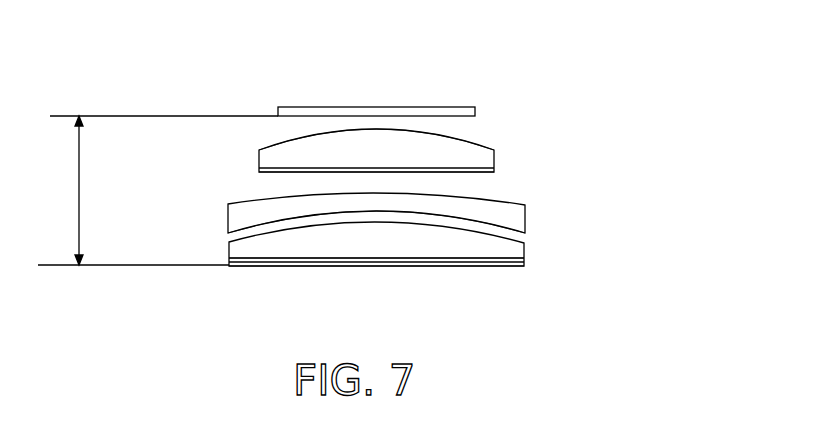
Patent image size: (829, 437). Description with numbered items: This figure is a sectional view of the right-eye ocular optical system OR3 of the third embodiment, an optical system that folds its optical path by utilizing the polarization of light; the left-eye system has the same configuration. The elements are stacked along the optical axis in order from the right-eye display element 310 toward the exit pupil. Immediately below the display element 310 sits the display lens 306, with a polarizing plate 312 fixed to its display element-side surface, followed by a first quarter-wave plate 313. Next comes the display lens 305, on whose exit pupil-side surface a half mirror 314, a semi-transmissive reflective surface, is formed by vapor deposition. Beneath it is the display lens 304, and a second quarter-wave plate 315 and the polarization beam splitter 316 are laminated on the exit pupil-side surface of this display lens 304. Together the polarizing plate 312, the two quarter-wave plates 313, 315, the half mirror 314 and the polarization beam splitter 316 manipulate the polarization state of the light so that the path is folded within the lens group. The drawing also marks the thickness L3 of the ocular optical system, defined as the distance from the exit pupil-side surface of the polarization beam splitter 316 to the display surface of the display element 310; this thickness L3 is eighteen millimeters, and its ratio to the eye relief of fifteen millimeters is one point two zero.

The right-eye display element 310 is at (413, 113).
The display lens 306 is at (460, 160).
The polarizing plate 312 is at (497, 168).
The first λ/4 plate 313 is at (497, 172).
The display lens 305 is at (524, 215).
The half mirror 314 is at (265, 222).
The display lens 304 is at (510, 249).
The second λ/4 plate 315 is at (229, 258).
The polarization beam splitter (PBS) 316 is at (229, 266).
The thickness of the ocular optical system L3 is at (60, 190).
The right-eye ocular optical system OR3 is at (652, 119).